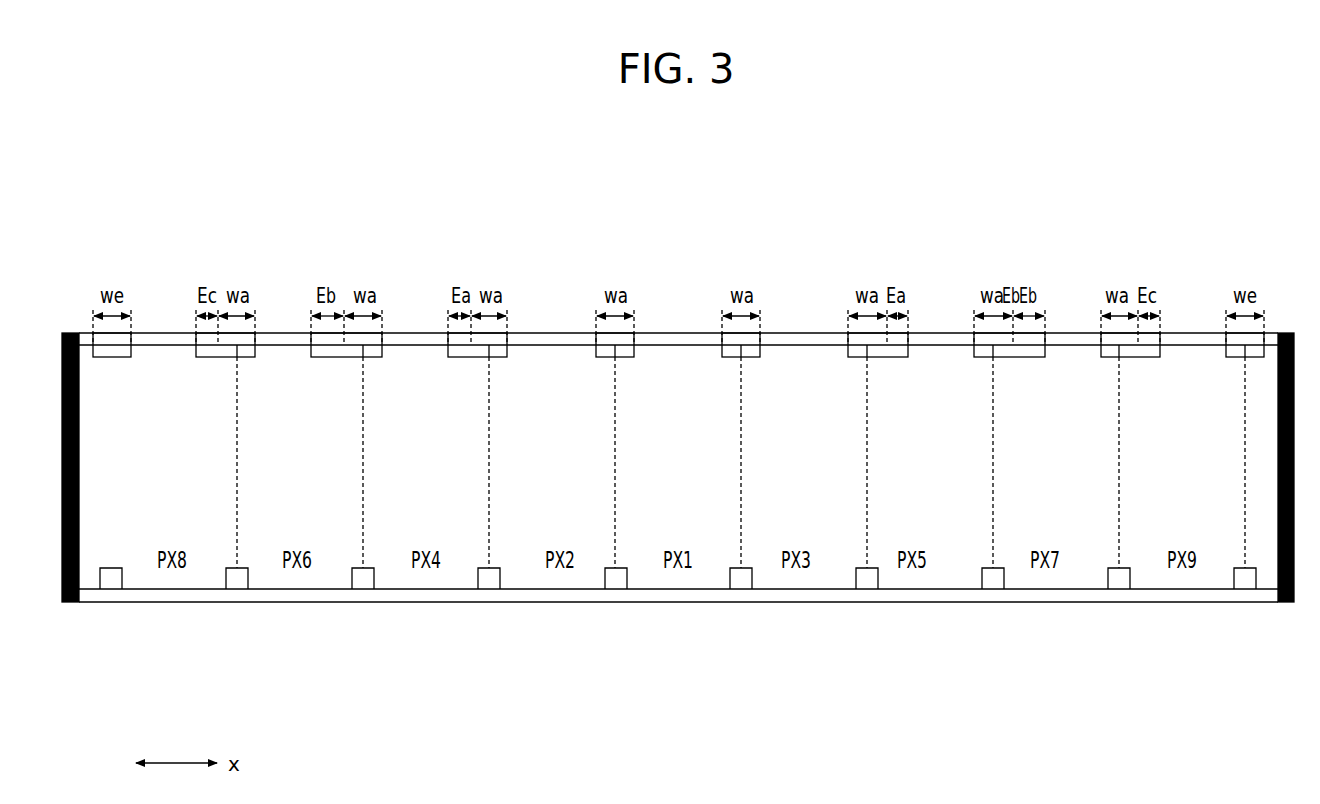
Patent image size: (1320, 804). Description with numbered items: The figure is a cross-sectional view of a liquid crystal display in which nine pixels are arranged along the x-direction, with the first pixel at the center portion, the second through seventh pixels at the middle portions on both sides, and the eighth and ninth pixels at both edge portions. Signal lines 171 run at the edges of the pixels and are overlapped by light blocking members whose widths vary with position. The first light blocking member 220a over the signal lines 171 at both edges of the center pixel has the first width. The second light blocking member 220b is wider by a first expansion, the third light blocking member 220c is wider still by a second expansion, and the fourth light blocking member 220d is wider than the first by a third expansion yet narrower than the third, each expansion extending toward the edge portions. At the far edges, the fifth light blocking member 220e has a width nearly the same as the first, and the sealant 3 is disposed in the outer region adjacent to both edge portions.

The first light blocking member 220a is at (629, 350).
The second light blocking member 220b is at (503, 350).
The third light blocking member 220c is at (377, 350).
The fourth light blocking member 220d is at (253, 350).
The fifth light blocking member 220e is at (125, 350).
The signal line 171 is at (490, 580).
The sealant 3 is at (70, 603).